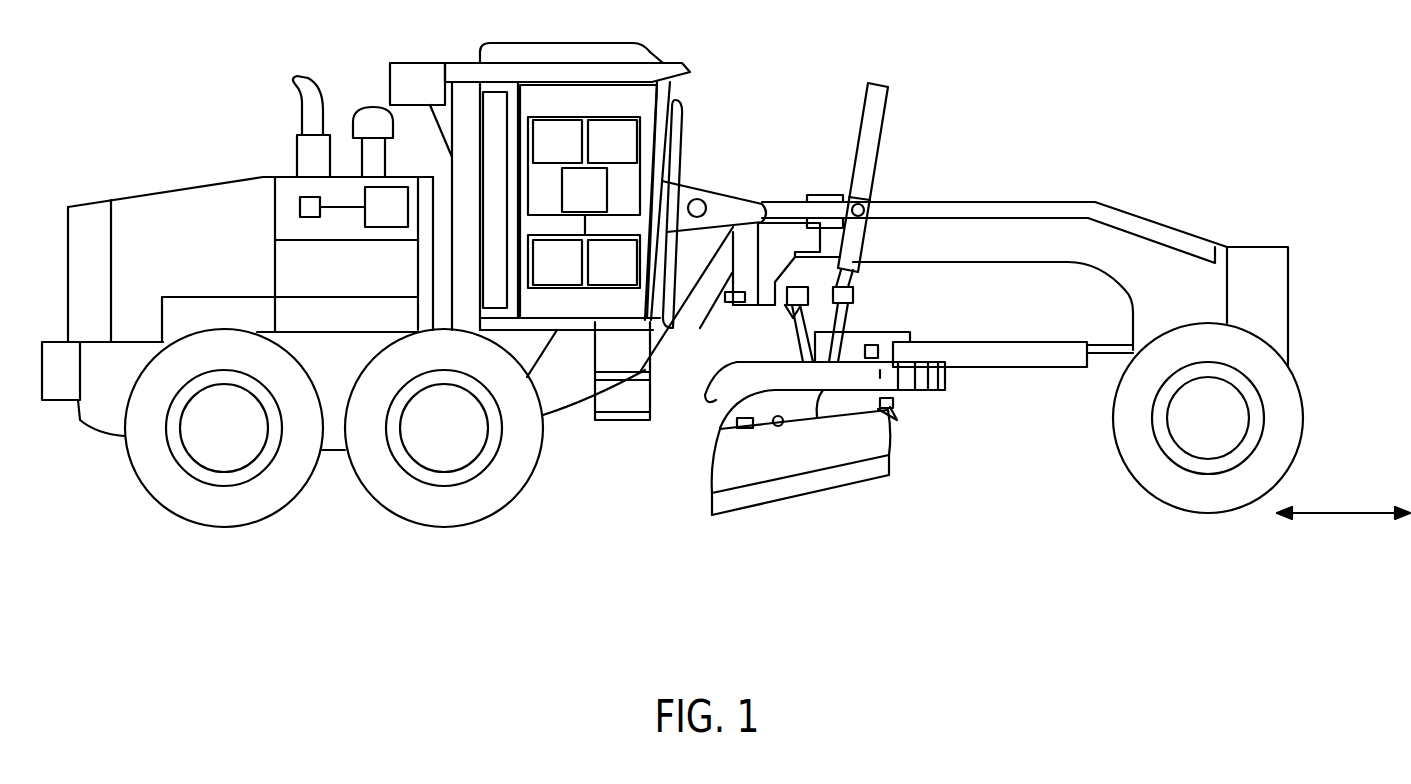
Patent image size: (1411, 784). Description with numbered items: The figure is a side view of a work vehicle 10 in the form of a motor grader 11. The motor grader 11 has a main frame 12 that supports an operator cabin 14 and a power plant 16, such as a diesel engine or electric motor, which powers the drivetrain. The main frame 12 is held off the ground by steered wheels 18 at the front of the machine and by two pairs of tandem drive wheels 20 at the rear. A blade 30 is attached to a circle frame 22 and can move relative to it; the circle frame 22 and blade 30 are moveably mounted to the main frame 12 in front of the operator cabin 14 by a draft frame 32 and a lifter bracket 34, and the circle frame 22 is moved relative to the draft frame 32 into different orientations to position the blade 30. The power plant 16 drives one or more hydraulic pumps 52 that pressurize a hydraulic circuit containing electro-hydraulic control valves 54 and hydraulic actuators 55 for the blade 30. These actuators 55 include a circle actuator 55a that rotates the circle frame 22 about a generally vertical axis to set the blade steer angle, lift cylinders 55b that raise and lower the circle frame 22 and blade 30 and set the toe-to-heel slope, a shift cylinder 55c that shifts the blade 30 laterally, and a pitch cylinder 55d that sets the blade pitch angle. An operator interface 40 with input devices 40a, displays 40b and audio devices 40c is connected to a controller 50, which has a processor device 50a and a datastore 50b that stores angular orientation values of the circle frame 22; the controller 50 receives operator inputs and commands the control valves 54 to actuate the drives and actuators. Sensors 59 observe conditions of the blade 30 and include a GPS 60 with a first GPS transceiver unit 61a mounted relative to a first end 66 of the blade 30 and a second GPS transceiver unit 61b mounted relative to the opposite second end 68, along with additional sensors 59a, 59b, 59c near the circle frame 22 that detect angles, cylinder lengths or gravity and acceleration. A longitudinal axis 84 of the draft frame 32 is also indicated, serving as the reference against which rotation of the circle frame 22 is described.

The work vehicle 10 is at (967, 98).
The motor grader 11 is at (1007, 192).
The main frame 12 is at (1155, 232).
The operator cabin 14 is at (640, 77).
The power plant 16 is at (160, 208).
The steered wheels 18 is at (1195, 450).
The tandem drive wheels 20 is at (430, 448).
The circle frame 22 is at (908, 390).
The blade 30 is at (798, 483).
The draft frame 32 is at (1003, 340).
The lifter bracket 34 is at (785, 228).
The operator interface 40 is at (585, 117).
The input devices 40a is at (557, 141).
The displays 40b is at (612, 141).
The audio devices 40c is at (584, 190).
The controller 50 is at (585, 288).
The processor device 50a is at (557, 262).
The datastore 50b is at (612, 262).
The hydraulic pumps 52 is at (390, 212).
The electro-hydraulic control valves 54 is at (300, 203).
The hydraulic actuators 55 is at (885, 188).
The circle actuator 55a is at (863, 340).
The lift cylinders 55b is at (870, 112).
The shift cylinder 55c is at (800, 340).
The pitch cylinder 55d is at (773, 430).
The sensors 59 is at (773, 377).
The additional sensor 59a is at (872, 348).
The additional sensor 59b is at (797, 302).
The additional sensor 59c is at (853, 295).
The GPS 60 is at (735, 430).
The first GPS transceiver unit 61a is at (747, 428).
The second GPS transceiver unit 61b is at (897, 413).
The first end 66 is at (708, 505).
The second end 68 is at (891, 465).
The longitudinal axis 84 is at (1345, 513).